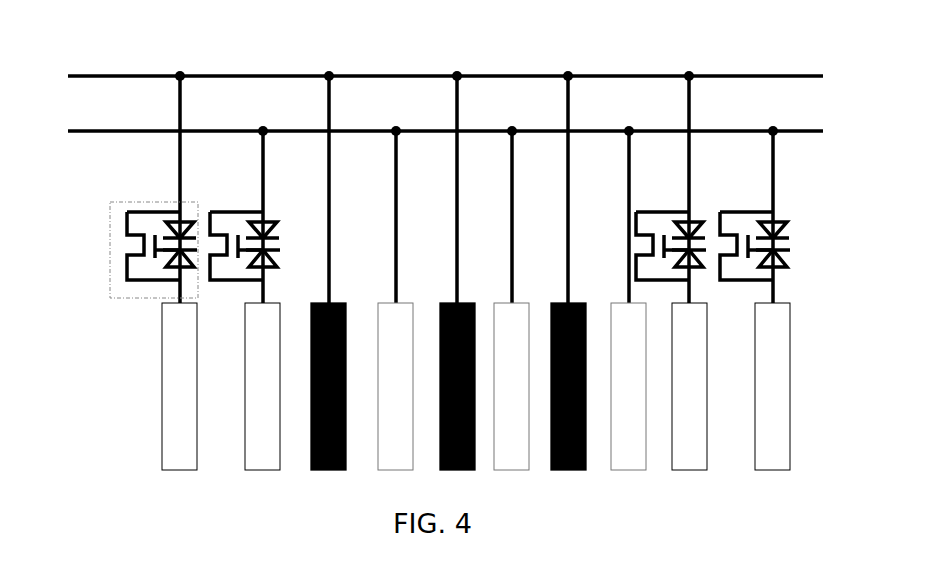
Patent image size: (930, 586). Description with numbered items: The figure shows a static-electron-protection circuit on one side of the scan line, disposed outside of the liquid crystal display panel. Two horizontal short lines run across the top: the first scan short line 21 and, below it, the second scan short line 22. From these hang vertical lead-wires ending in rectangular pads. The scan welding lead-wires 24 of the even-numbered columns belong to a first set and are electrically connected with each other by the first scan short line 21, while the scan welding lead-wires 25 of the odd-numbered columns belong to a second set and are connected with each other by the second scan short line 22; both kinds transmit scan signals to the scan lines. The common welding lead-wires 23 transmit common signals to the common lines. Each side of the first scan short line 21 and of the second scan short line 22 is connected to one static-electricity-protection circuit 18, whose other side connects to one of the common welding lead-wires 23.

The static-electricity-protection circuit 18 is at (110, 248).
The first scan short line 21 is at (112, 76).
The second scan short line 22 is at (114, 131).
The common welding lead-wire 23 is at (162, 386).
The scan welding lead-wire 24 is at (338, 304).
The scan welding lead-wire 25 is at (404, 304).